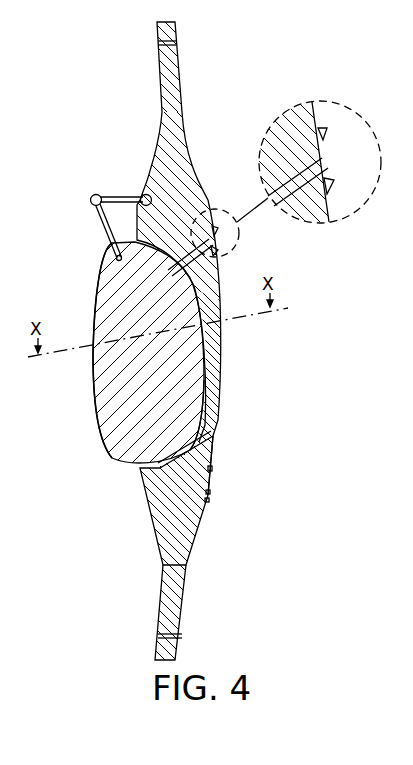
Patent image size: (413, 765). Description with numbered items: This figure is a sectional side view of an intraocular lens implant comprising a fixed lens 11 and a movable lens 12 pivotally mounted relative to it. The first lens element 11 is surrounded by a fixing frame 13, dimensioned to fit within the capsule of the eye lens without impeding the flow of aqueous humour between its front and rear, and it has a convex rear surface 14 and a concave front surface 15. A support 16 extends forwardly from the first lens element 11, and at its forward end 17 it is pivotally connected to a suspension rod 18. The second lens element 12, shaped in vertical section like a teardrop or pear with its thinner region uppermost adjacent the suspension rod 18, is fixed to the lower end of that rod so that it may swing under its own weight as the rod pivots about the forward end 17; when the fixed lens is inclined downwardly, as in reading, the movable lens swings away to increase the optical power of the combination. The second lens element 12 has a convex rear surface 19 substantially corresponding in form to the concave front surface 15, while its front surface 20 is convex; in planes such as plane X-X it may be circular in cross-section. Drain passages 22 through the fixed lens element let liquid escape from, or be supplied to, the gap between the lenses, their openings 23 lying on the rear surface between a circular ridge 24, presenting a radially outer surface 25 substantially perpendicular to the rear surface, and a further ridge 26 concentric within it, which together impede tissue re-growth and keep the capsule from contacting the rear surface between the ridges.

The fixed lens 11 is at (197, 173).
The movable lens 12 is at (160, 360).
The fixing frame 13 is at (179, 65).
The convex rear surface 14 is at (224, 370).
The concave front surface 15 is at (176, 500).
The support 16 is at (118, 195).
The forward end 17 is at (93, 194).
The suspension rod 18 is at (102, 229).
The convex rear surface 19 is at (190, 432).
The front surface 20 is at (93, 376).
The drain passages 22 is at (205, 455).
The openings 23 is at (211, 480).
The circular ridge 24 is at (209, 494).
The radially outer surface 25 is at (322, 132).
The further ridge 26 is at (212, 466).